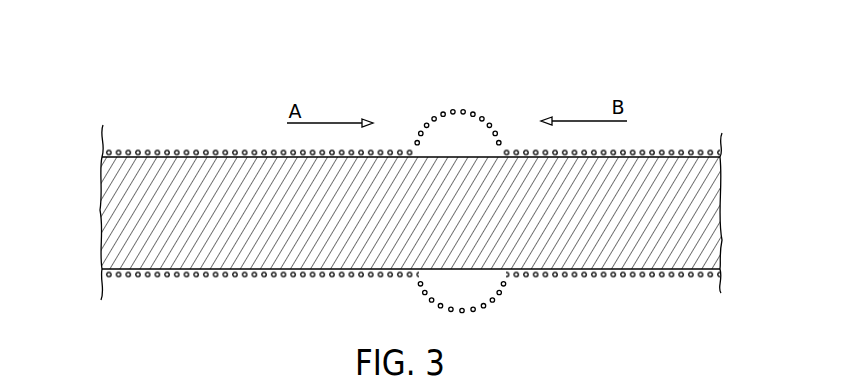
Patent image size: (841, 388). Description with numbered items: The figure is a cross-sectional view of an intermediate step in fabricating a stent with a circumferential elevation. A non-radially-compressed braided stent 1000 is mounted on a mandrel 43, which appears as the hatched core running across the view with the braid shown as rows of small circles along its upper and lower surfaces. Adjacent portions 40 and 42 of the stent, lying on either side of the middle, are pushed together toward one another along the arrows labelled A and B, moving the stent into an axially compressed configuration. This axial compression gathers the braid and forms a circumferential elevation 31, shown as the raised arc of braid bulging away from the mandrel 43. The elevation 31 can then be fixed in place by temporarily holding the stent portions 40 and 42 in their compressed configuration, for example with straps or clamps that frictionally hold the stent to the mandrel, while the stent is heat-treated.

The non-radially-compressed braided stent 1000 is at (140, 150).
The circumferential elevation 31 is at (474, 90).
The mandrel 43 is at (363, 222).
The stent portion 42 is at (199, 290).
The stent portion 40 is at (645, 290).